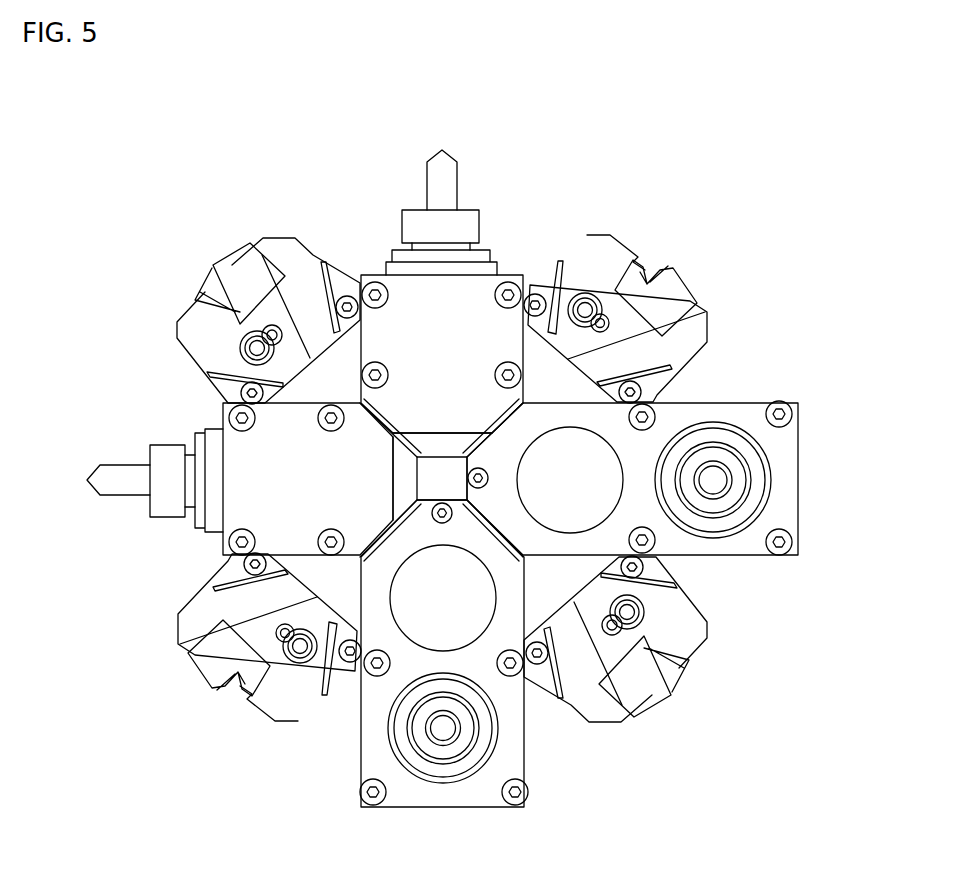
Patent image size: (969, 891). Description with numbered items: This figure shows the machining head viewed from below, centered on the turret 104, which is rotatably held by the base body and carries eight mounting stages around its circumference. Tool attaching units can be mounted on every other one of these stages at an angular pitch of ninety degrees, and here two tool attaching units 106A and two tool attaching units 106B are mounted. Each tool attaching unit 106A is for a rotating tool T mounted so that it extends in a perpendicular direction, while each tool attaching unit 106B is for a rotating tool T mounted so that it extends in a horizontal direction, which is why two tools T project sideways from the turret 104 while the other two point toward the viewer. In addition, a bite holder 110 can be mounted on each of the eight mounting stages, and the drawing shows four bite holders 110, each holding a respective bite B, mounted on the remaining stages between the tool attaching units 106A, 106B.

The turret 104 is at (336, 138).
The tool attaching unit 106A is at (753, 386).
The tool attaching unit 106B is at (529, 222).
The bite holder 110 is at (623, 243).
The bite B is at (681, 293).
The rotating tool T is at (453, 178).